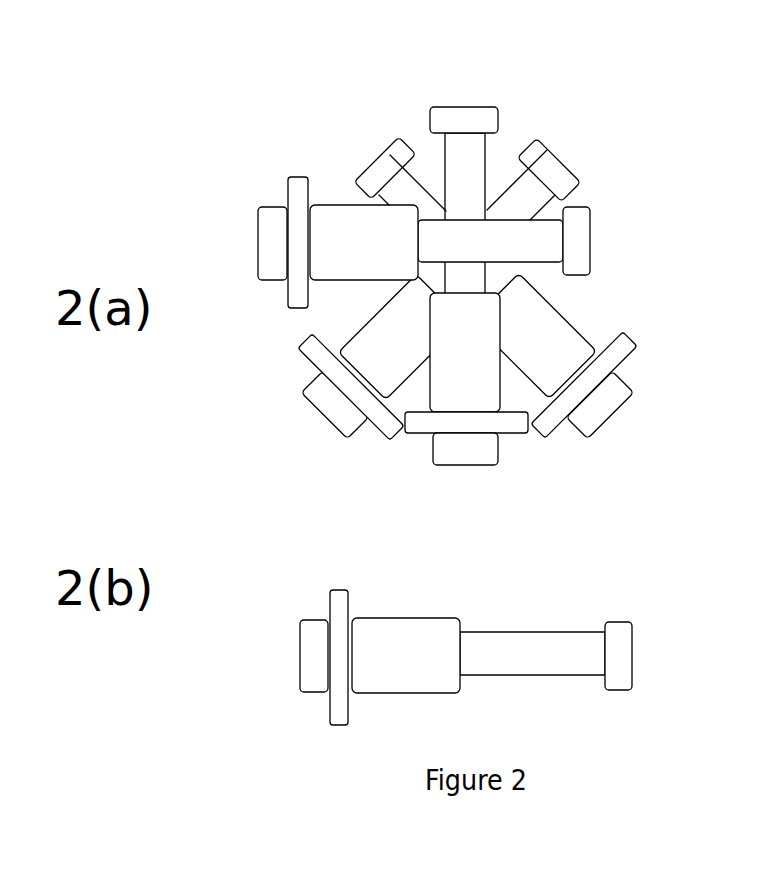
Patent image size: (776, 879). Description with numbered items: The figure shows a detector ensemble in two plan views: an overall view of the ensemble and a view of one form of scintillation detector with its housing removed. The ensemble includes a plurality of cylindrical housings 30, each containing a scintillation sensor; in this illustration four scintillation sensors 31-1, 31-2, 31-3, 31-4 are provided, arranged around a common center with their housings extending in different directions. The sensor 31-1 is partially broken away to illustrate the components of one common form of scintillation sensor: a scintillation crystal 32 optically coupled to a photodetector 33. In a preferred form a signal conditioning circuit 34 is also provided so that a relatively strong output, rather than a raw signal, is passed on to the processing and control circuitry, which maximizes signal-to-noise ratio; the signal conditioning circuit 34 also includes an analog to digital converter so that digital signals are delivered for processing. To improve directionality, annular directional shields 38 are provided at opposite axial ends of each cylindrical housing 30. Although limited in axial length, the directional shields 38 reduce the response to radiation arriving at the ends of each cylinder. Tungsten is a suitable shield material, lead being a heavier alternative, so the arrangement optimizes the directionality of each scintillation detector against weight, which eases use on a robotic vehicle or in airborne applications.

The cylindrical housing 30 is at (502, 187).
The scintillation sensor 31-1 is at (556, 243).
The scintillation sensor 31-2 is at (463, 150).
The scintillation sensor 31-3 is at (528, 192).
The scintillation sensor 31-4 is at (407, 188).
The scintillation crystal 32 is at (553, 645).
The photodetector 33 is at (377, 628).
The signal conditioning circuit 34 is at (331, 710).
The annular directional shield 38 is at (316, 665).